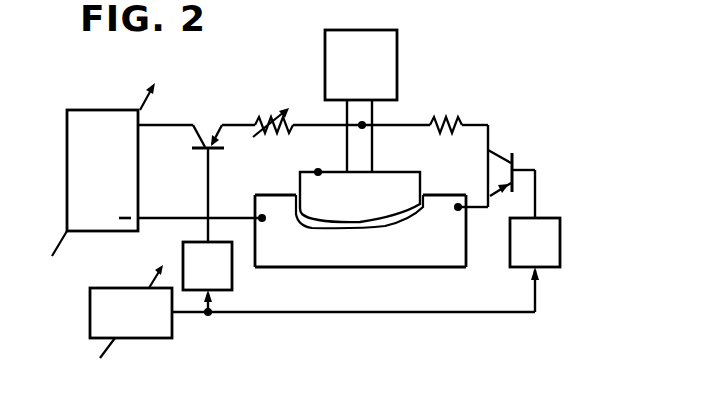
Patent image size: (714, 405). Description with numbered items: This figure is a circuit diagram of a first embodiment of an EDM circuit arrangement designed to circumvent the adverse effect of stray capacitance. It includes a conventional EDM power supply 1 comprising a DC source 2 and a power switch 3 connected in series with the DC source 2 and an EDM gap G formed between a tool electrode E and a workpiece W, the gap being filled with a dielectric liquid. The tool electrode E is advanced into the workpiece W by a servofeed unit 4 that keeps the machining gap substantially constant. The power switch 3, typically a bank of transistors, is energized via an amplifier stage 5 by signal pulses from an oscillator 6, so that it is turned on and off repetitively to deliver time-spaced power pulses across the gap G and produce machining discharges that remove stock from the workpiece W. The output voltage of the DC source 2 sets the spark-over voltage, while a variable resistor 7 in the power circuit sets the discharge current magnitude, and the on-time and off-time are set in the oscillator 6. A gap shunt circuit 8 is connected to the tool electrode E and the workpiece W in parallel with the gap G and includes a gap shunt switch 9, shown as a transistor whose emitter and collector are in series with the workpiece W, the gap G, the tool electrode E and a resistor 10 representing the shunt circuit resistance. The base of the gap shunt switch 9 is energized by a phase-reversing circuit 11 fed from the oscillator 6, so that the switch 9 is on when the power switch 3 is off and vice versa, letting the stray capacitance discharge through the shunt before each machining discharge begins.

The EDM power supply 1 is at (245, 185).
The DC source 2 is at (67, 170).
The power switch 3 is at (205, 130).
The servofeed unit 4 is at (397, 48).
The amplifier stage 5 is at (183, 248).
The oscillator 6 is at (90, 311).
The variable resistor 7 is at (268, 118).
The gap shunt circuit 8 is at (472, 146).
The gap shunt switch 9 is at (502, 158).
The resistor 10 is at (445, 120).
The phase-reversing circuit 11 is at (560, 243).
The tool electrode E is at (400, 182).
The EDM gap G is at (360, 228).
The workpiece W is at (411, 260).